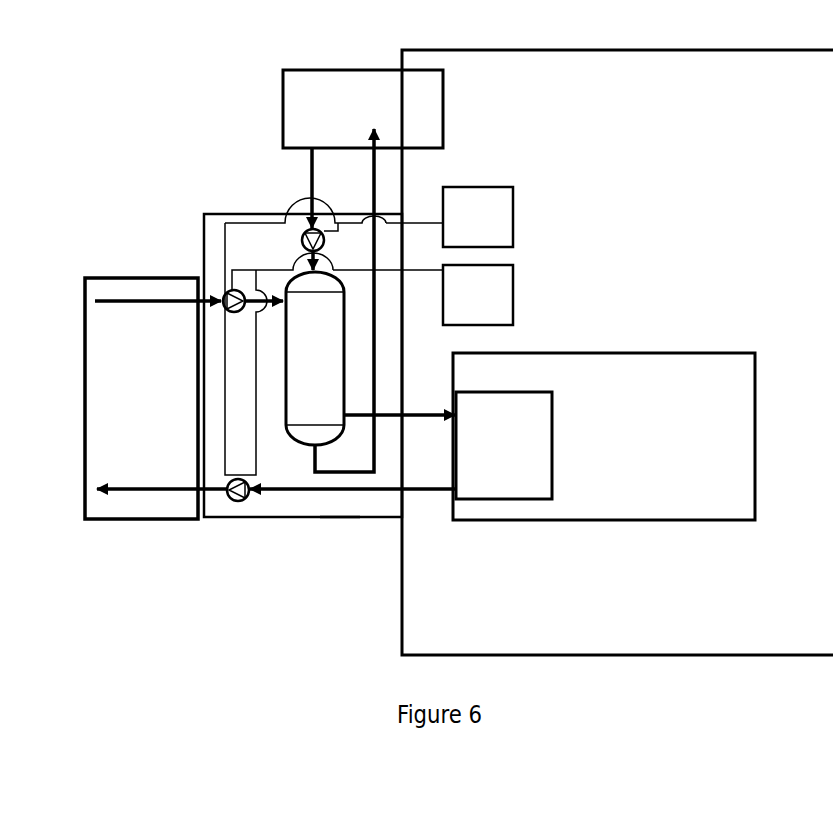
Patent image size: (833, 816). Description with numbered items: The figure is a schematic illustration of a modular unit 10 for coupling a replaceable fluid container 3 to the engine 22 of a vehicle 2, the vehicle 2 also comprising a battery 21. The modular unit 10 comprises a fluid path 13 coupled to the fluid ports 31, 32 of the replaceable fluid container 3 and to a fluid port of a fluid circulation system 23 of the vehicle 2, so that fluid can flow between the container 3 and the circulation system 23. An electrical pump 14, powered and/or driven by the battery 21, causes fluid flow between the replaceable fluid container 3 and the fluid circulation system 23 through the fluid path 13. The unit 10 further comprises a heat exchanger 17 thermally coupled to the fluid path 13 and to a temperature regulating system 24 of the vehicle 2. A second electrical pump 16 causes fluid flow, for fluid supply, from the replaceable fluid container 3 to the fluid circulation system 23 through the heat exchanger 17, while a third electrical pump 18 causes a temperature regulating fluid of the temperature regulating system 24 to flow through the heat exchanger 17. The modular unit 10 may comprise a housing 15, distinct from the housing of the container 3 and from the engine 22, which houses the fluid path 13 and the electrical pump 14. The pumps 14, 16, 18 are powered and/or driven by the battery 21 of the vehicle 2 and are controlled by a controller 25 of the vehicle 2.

The vehicle 2 is at (799, 97).
The replaceable fluid container 3 is at (129, 362).
The modular unit 10 is at (268, 466).
The fluid path 13 is at (339, 500).
The electrical pump 14 is at (238, 502).
The housing 15 is at (276, 518).
The electrical pump 16 is at (224, 294).
The heat exchanger 17 is at (299, 367).
The electrical pump 18 is at (302, 243).
The battery 21 is at (468, 226).
The engine 22 is at (709, 394).
The fluid circulation system 23 is at (501, 431).
The temperature regulating system 24 is at (323, 121).
The controller 25 is at (465, 306).
The fluid port 31 is at (195, 492).
The fluid port 32 is at (205, 298).